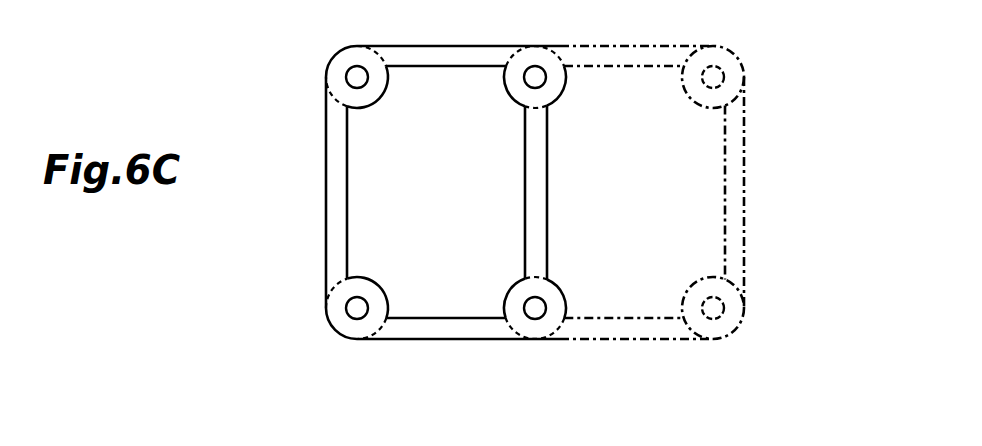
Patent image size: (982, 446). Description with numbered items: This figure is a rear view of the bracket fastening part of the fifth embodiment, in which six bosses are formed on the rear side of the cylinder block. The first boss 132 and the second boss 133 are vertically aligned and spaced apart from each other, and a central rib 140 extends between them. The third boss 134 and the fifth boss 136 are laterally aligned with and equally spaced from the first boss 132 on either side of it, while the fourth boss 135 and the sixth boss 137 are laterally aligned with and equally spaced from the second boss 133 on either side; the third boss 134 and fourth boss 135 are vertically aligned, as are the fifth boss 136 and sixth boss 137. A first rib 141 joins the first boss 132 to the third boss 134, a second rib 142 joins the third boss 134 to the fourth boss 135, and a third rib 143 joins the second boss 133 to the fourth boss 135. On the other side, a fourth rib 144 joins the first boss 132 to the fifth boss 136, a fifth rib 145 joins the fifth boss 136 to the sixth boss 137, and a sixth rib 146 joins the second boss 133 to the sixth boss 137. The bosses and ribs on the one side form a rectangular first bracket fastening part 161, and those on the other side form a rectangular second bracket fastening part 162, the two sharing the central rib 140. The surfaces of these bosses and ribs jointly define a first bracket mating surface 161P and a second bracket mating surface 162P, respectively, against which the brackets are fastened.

The first boss 132 is at (545, 58).
The second boss 133 is at (546, 327).
The third boss 134 is at (337, 103).
The fourth boss 135 is at (337, 285).
The fifth boss 136 is at (723, 60).
The sixth boss 137 is at (735, 308).
The central rib 140 is at (532, 175).
The first rib 141 is at (435, 60).
The second rib 142 is at (337, 210).
The third rib 143 is at (433, 328).
The fourth rib 144 is at (613, 60).
The fifth rib 145 is at (730, 178).
The sixth rib 146 is at (612, 328).
The first bracket fastening part 161 is at (322, 163).
The first bracket mating surface 161P is at (371, 319).
The second bracket fastening part 162 is at (752, 191).
The second bracket mating surface 162P is at (705, 325).